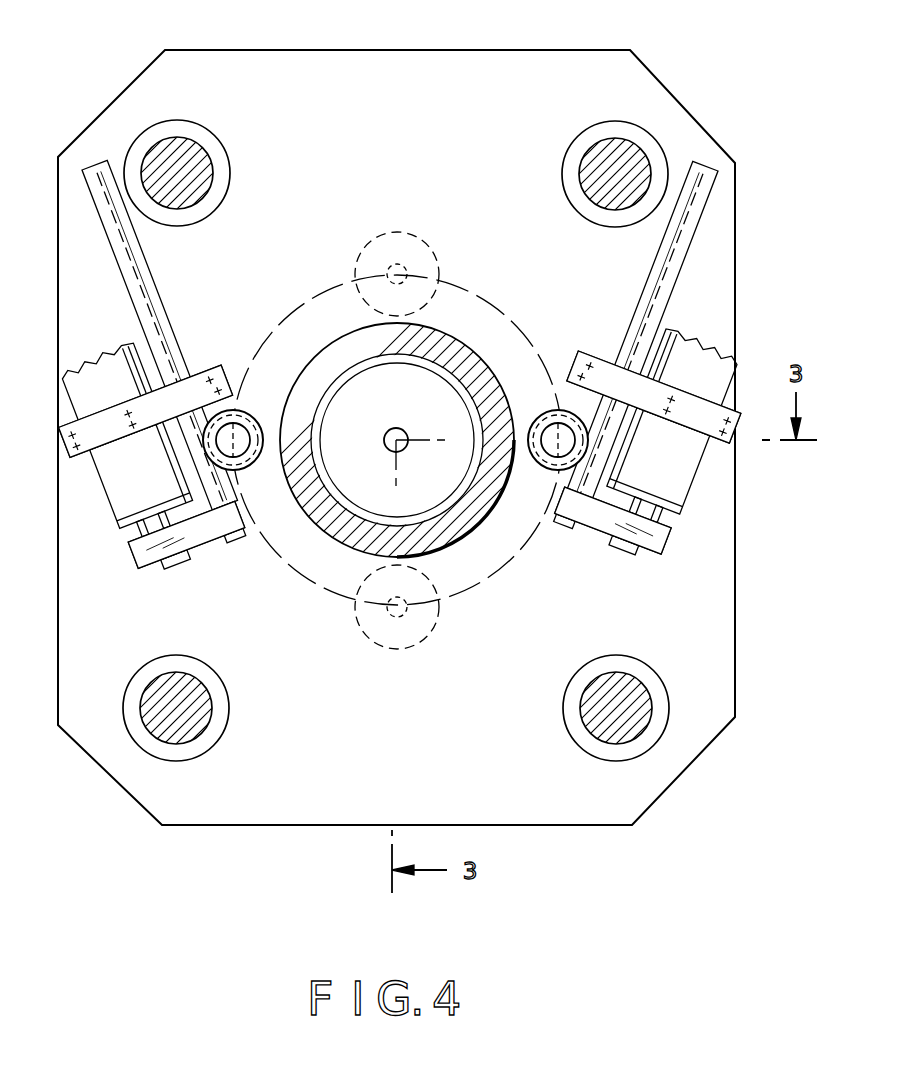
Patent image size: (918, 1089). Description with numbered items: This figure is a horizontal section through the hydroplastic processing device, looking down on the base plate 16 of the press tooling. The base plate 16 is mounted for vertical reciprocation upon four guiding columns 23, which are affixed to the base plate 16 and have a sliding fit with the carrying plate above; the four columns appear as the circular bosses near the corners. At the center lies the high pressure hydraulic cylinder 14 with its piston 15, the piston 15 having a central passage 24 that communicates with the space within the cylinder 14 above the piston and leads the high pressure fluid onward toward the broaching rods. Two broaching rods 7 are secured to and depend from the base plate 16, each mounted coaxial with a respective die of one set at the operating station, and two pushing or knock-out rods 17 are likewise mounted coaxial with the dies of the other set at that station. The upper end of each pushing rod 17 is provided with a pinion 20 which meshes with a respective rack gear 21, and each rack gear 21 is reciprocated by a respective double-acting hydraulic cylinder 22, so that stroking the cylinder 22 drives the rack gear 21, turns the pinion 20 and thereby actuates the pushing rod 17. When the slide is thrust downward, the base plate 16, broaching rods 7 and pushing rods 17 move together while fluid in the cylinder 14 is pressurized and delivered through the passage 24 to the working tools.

The base plate 16 is at (318, 64).
The guiding columns 23 is at (191, 152).
The broaching rods 7 is at (412, 250).
The high pressure hydraulic cylinder 14 is at (489, 386).
The piston 15 is at (338, 386).
The central passage 24 is at (406, 432).
The rack gear 21 is at (96, 166).
The double-acting hydraulic cylinder 22 is at (84, 384).
The pinion 20 is at (250, 420).
The pushing rods 17 is at (260, 470).